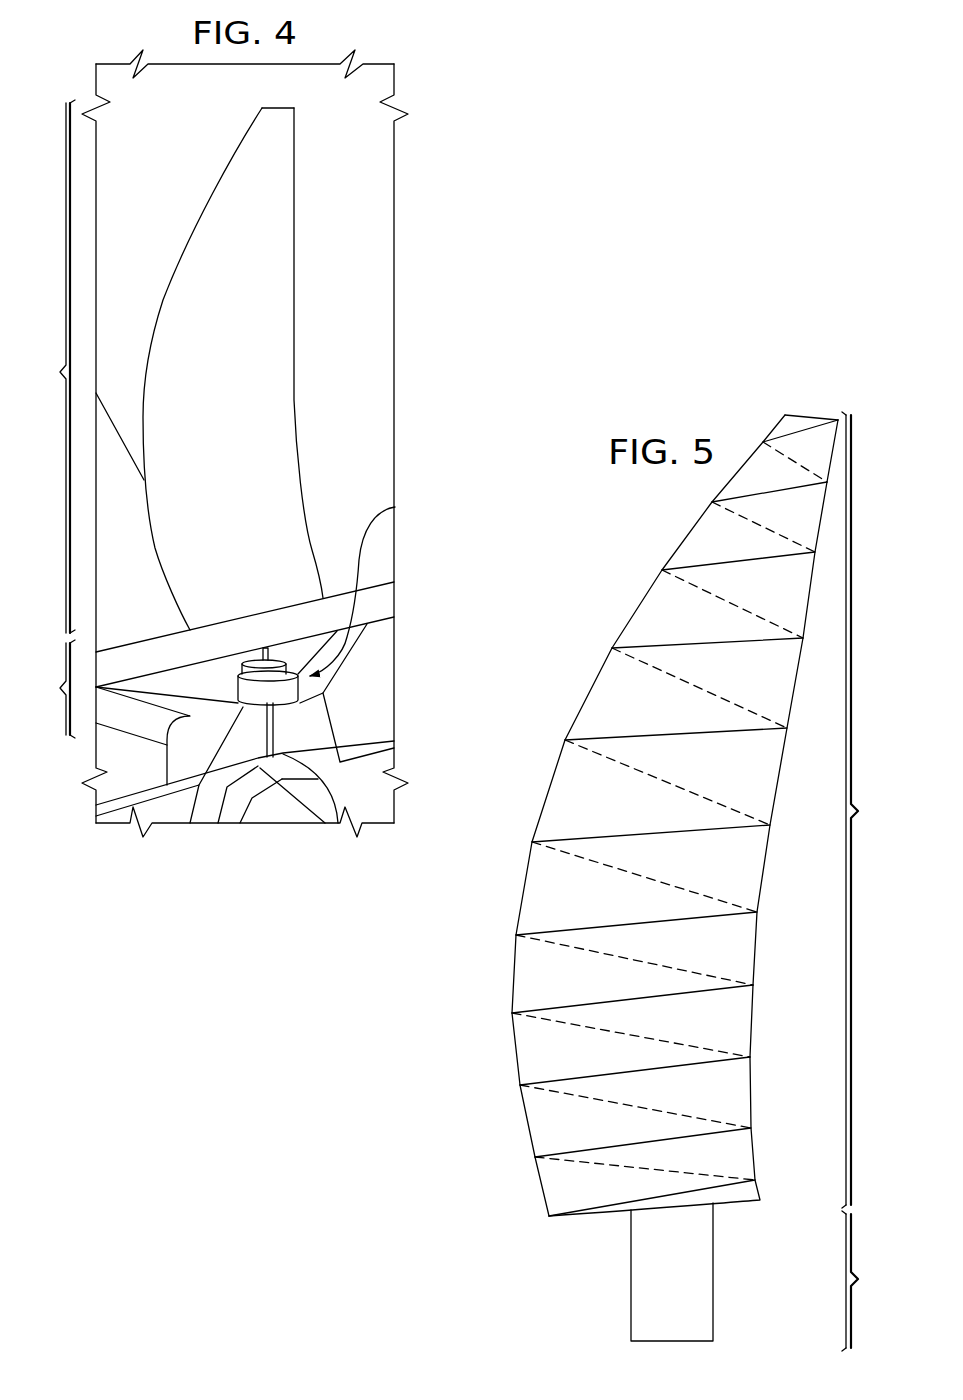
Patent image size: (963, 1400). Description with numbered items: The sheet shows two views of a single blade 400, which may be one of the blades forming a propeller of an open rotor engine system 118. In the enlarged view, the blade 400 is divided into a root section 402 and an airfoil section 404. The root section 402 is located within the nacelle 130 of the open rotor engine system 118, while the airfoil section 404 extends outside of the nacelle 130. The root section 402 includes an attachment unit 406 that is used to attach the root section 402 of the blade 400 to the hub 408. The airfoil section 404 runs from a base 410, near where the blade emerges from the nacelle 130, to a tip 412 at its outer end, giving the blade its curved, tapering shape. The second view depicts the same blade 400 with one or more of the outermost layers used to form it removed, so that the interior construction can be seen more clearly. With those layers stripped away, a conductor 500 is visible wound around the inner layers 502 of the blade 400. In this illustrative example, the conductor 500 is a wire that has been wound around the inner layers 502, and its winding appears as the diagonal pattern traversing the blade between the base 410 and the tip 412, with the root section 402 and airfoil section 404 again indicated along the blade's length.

In FIG. 4, the blade 400 is at (170, 232).
In FIG. 5, the blade 400 is at (616, 585).
In FIG. 4, the root section 402 is at (43, 689).
In FIG. 5, the root section 402 is at (874, 1281).
In FIG. 4, the airfoil section 404 is at (43, 366).
In FIG. 5, the airfoil section 404 is at (874, 810).
In FIG. 4, the attachment unit 406 is at (350, 632).
In FIG. 4, the hub 408 is at (313, 790).
In FIG. 4, the base 410 is at (258, 613).
In FIG. 5, the base 410 is at (741, 1207).
In FIG. 4, the tip 412 is at (218, 175).
In FIG. 5, the tip 412 is at (807, 414).
In FIG. 4, the open rotor engine system 118 is at (125, 432).
In FIG. 4, the nacelle 130 is at (150, 645).
In FIG. 5, the conductor 500 is at (518, 973).
In FIG. 5, the inner layers 502 is at (608, 828).